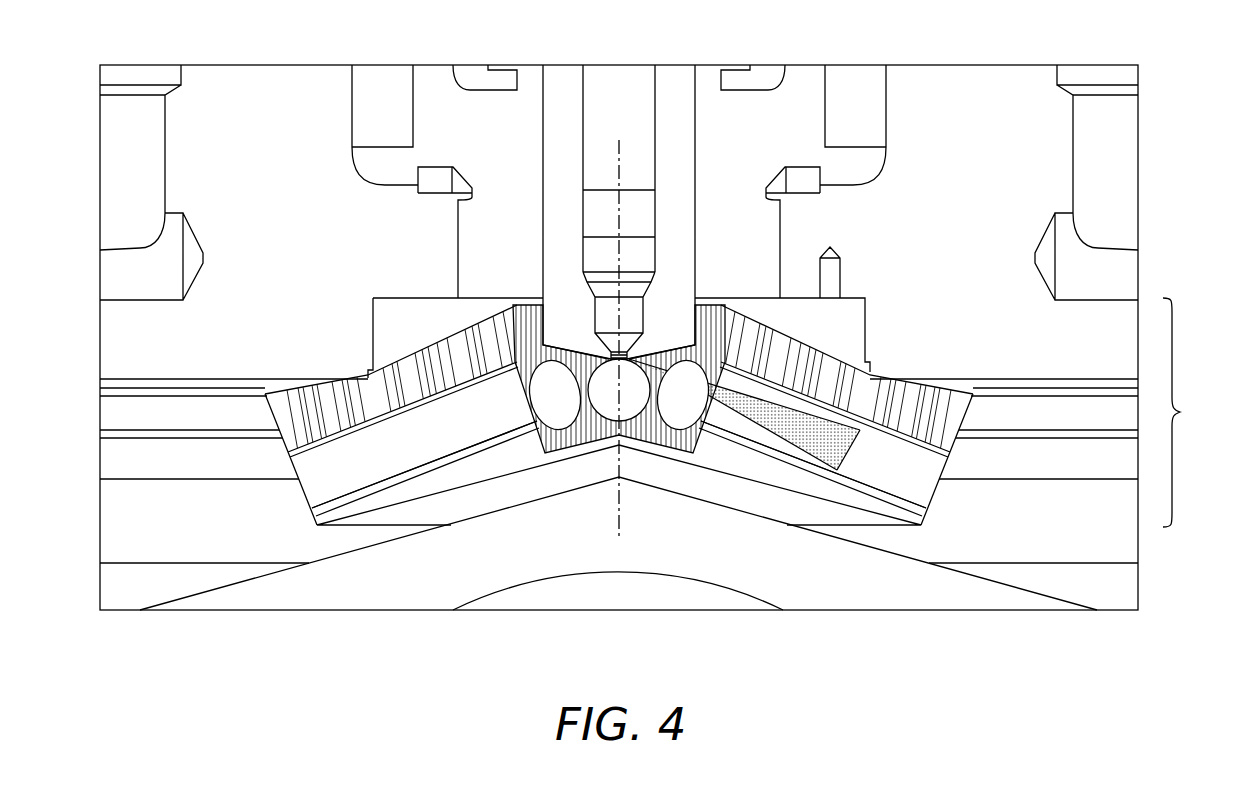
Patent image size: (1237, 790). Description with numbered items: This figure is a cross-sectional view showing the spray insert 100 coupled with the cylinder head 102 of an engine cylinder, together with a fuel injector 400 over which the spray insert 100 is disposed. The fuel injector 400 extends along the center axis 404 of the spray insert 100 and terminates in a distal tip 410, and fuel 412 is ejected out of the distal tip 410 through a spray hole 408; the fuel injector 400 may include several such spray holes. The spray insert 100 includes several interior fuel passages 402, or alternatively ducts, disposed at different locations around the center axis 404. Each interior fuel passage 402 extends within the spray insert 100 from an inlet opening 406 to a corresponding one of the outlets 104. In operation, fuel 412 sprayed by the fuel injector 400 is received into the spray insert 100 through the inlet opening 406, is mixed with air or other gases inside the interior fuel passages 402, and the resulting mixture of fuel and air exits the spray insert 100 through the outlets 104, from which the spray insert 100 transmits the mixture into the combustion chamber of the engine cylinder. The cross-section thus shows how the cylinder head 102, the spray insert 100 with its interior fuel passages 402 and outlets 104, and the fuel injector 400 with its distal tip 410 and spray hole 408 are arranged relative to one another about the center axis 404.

The spray insert 100 is at (1191, 412).
The cylinder head 102 is at (112, 336).
The outlets 104 is at (939, 500).
The fuel injector 400 is at (620, 77).
The interior fuel passages 402 is at (890, 468).
The center axis 404 is at (619, 500).
The inlet opening 406 is at (693, 413).
The spray hole 408 is at (630, 361).
The distal tip 410 is at (603, 368).
The fuel 412 is at (810, 433).